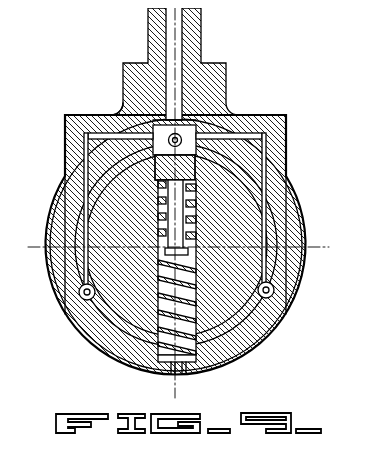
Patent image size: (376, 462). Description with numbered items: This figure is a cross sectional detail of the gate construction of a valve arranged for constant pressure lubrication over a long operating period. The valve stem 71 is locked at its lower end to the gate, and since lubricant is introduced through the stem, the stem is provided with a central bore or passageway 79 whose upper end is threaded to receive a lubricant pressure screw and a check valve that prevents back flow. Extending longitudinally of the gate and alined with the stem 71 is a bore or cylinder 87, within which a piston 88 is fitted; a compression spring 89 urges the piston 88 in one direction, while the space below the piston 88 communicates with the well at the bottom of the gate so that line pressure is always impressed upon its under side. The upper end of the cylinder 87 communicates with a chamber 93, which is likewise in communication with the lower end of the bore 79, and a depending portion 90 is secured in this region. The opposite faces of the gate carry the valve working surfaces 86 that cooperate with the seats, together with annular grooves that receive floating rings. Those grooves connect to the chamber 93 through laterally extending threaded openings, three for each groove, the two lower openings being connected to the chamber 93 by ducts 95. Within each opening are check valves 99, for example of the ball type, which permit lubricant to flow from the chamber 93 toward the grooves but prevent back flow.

The valve stem 71 is at (194, 33).
The central bore or passageway 79 is at (173, 18).
The valve working surfaces 86 is at (279, 261).
The bore or cylinder 87 is at (153, 303).
The piston 88 is at (220, 117).
The compression spring 89 is at (143, 350).
The depending portion 90 is at (178, 216).
The chamber 93 is at (207, 103).
The ducts 95 is at (257, 152).
The check valves 99 is at (120, 107).